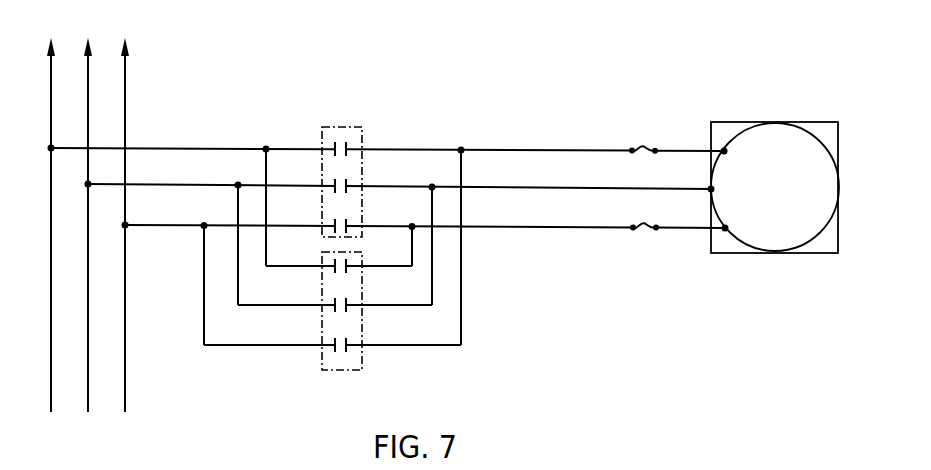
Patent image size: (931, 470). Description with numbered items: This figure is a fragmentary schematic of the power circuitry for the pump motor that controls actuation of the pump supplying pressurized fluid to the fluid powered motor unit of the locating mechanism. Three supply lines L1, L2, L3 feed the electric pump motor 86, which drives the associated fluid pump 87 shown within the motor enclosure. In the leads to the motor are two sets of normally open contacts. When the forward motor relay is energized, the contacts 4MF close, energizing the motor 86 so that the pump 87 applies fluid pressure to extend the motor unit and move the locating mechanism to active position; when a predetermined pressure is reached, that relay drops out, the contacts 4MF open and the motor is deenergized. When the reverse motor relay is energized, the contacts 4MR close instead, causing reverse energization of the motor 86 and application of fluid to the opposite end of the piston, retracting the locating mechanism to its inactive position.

The electric pump motor 86 is at (773, 132).
The fluid pump 87 is at (817, 122).
The normally open contacts 4MF is at (350, 127).
The normally open contacts 4MR is at (322, 363).
The power supply line L1 is at (47, 213).
The power supply line L2 is at (87, 213).
The power supply line L3 is at (124, 213).